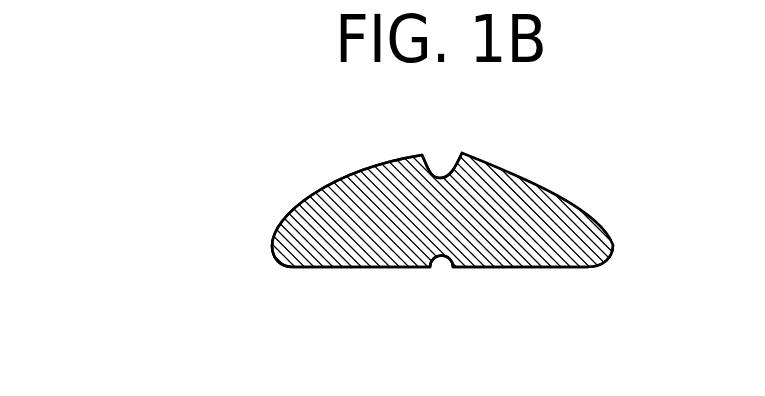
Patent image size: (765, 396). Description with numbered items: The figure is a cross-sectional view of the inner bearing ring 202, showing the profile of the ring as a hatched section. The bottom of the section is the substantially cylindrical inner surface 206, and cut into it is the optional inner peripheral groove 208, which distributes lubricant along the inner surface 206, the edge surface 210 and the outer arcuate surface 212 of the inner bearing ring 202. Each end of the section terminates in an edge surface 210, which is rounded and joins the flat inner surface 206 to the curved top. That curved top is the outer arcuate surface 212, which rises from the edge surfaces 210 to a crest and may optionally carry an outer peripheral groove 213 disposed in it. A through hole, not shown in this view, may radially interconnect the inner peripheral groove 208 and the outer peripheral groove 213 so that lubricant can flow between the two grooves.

The inner bearing ring 202 is at (617, 187).
The inner surface 206 is at (562, 268).
The inner peripheral groove 208 is at (443, 265).
The edge surface 210 is at (272, 241).
The outer arcuate surface 212 is at (327, 190).
The outer peripheral groove 213 is at (440, 170).